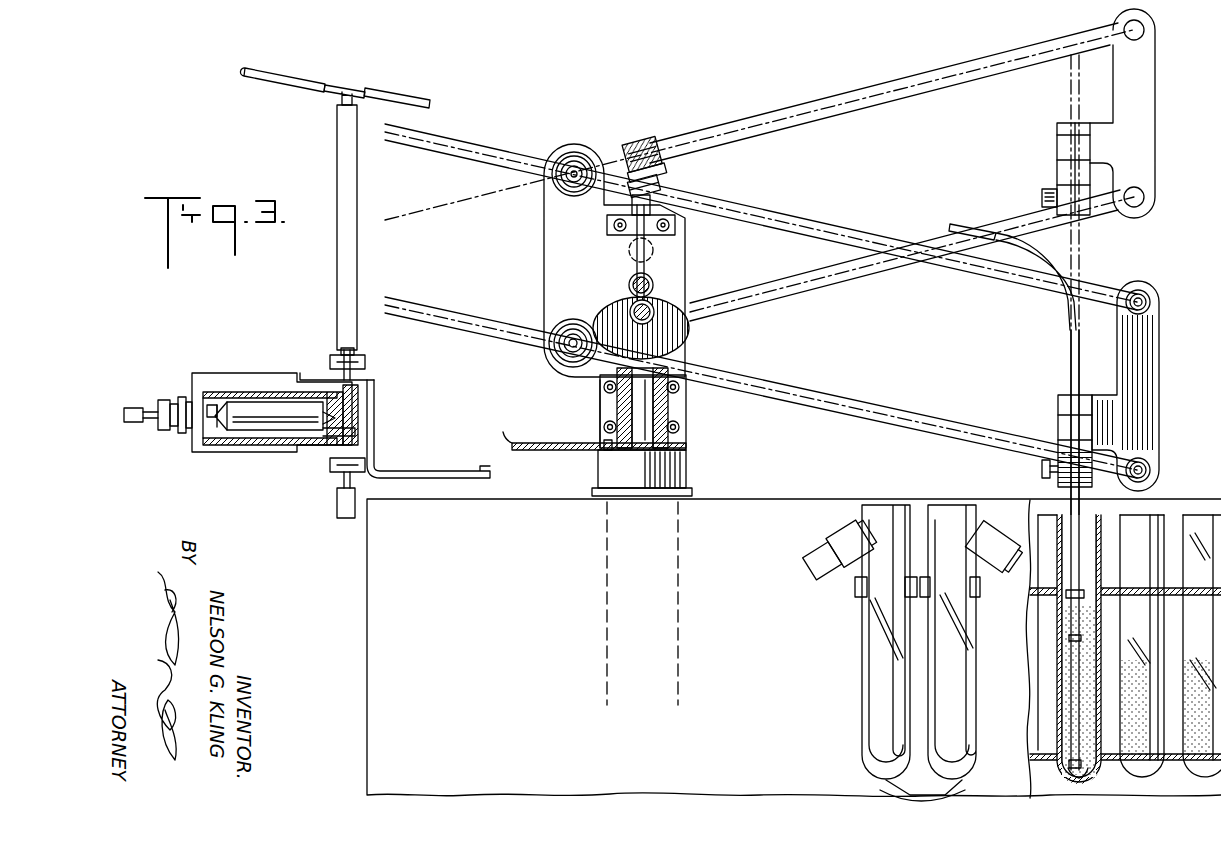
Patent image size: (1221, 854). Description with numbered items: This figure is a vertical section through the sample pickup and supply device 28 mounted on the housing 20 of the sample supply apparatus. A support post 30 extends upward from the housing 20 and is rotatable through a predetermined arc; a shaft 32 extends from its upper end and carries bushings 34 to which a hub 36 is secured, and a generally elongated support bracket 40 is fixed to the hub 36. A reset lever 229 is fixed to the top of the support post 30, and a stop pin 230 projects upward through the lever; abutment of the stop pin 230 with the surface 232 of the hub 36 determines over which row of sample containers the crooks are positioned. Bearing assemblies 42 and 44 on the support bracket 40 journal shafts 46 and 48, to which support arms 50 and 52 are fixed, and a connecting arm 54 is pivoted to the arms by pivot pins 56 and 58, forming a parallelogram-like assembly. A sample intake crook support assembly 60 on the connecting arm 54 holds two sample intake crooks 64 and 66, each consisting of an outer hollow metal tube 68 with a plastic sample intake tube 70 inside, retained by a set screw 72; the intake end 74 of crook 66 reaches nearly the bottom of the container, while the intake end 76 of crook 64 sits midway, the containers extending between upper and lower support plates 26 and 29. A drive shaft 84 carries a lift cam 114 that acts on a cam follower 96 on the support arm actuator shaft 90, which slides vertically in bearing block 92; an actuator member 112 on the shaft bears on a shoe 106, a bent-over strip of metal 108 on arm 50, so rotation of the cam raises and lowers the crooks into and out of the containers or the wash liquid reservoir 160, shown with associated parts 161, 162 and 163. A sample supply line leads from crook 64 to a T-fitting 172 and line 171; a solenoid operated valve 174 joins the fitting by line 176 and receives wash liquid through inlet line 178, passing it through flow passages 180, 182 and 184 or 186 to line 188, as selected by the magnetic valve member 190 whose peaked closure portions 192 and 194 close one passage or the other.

The housing 20 is at (367, 594).
The upper support plate 26 is at (1175, 600).
The sample pickup and supply device 28 is at (1198, 260).
The lower support plate 29 is at (1178, 765).
The support post 30 is at (686, 460).
The shaft 32 is at (668, 425).
The bushings 34 is at (675, 375).
The hub 36 is at (686, 406).
The support bracket 40 is at (685, 266).
The bearing assembly 42 is at (560, 152).
The bearing assembly 44 is at (570, 330).
The shaft 46 is at (578, 150).
The shaft 48 is at (555, 330).
The support arm 50 is at (755, 212).
The support arm 52 is at (791, 385).
The connecting arm 54 is at (1150, 403).
The pivot pin 56 is at (1152, 302).
The pivot pin 58 is at (1152, 470).
The sample intake crook support assembly 60 is at (1058, 418).
The sample intake crook 64 is at (1096, 568).
The sample intake crook 66 is at (1095, 742).
The outer hollow metal tube 68 is at (1082, 530).
The plastic sample intake tube 70 is at (1081, 640).
The set screw 72 is at (1040, 468).
The intake end 74 is at (1086, 776).
The intake end 76 is at (1068, 615).
The drive shaft 84 is at (690, 325).
The support arm actuator shaft 90 is at (630, 260).
The bearing block 92 is at (630, 237).
The cam follower 96 is at (628, 285).
The shoe 106 is at (653, 150).
The bent-over strip of metal 108 is at (665, 175).
The actuator member 112 is at (632, 200).
The lift cam 114 is at (692, 320).
The wash liquid reservoir 160 is at (862, 660).
The sensor 161 is at (860, 530).
The clip 162 is at (855, 590).
The sensor 163 is at (995, 545).
The line 171 is at (287, 70).
The T-fitting 172 is at (348, 88).
The solenoid operated valve 174 is at (340, 381).
The line 176 is at (337, 170).
The wash liquid inlet line 178 is at (337, 507).
The flow passage 180 is at (343, 440).
The flow passage 182 is at (358, 390).
The flow passage 184 is at (348, 400).
The flow passage 186 is at (210, 403).
The line 188 is at (130, 408).
The magnetic valve member 190 is at (268, 430).
The peaked closure portion 192 is at (222, 432).
The peaked closure portion 194 is at (325, 440).
The reset lever 229 is at (510, 443).
The stop pin 230 is at (603, 434).
The surface 232 is at (600, 390).